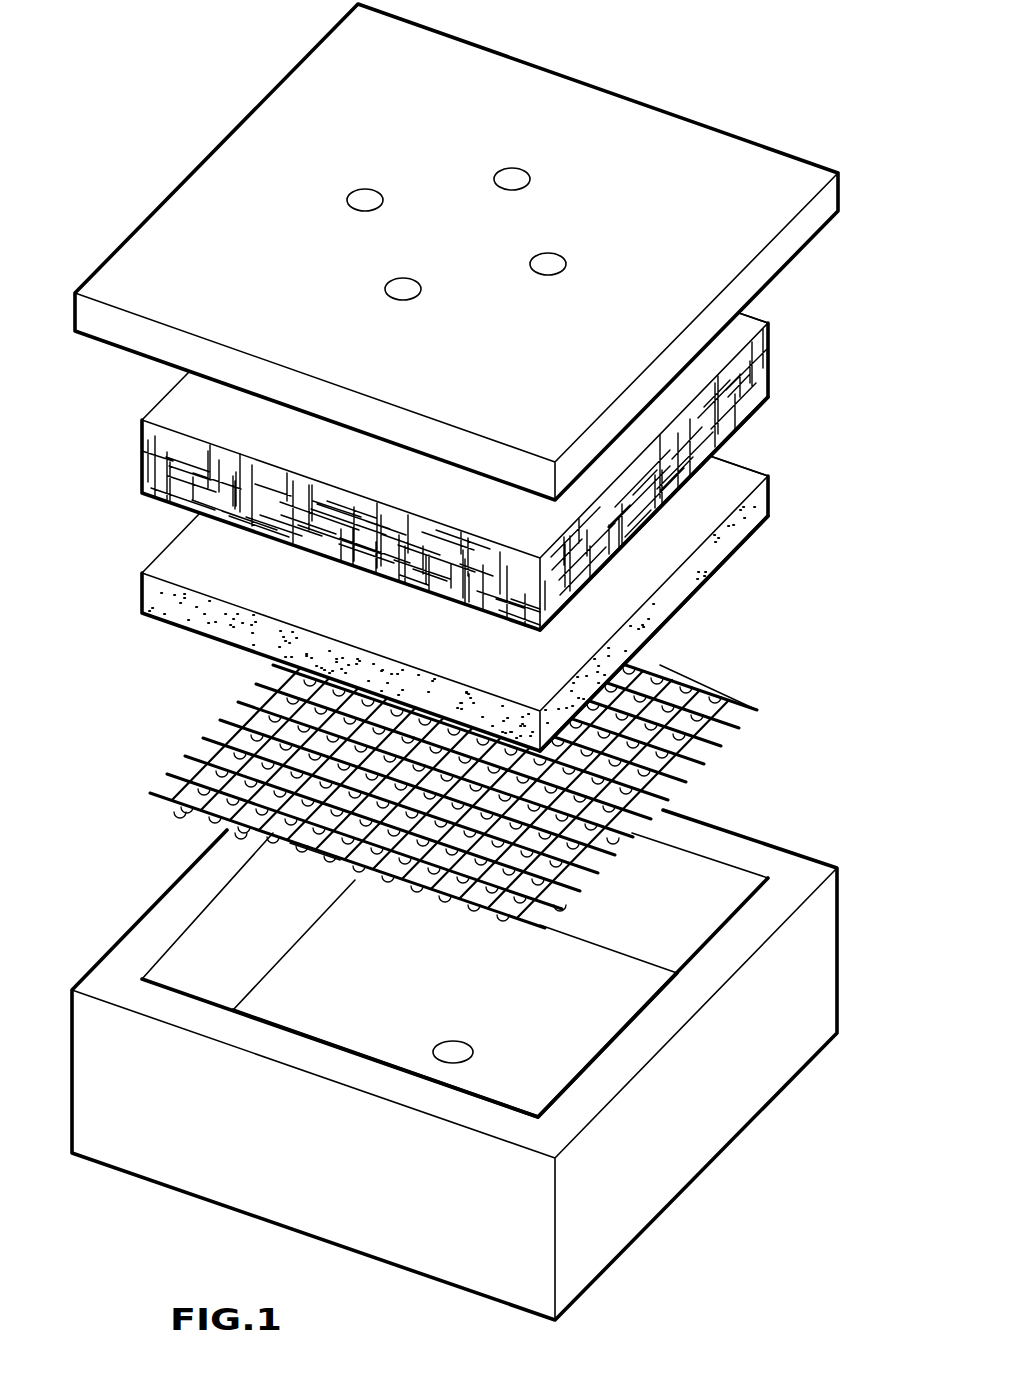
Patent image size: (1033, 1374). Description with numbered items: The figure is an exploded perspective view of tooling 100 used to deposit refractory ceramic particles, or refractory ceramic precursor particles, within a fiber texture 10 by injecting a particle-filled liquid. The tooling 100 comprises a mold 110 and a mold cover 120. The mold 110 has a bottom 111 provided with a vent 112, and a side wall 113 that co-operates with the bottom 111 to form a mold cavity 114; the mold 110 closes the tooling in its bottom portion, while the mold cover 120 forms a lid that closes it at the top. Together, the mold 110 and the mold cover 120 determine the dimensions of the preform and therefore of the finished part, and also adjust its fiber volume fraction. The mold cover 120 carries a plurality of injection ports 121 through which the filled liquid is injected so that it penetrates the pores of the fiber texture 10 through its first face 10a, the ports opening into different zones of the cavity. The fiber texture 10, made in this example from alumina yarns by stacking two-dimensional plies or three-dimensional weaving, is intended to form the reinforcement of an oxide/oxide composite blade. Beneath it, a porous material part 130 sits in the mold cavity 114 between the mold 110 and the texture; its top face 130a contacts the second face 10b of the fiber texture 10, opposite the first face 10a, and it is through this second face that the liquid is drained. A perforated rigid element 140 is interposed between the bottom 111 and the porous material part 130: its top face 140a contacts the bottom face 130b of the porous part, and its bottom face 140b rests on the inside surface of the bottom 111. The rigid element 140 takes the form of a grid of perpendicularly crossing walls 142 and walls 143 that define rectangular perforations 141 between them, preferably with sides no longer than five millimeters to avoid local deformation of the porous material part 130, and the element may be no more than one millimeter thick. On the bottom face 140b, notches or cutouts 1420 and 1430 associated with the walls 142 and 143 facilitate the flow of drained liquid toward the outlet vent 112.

The tooling 100 is at (462, 660).
The mold cover 120 is at (705, 148).
The injection ports 121 is at (543, 262).
The fiber texture 10 is at (757, 358).
The first face of the fiber texture 10a is at (750, 327).
The second face of the fiber texture 10b is at (765, 413).
The porous material part 130 is at (758, 500).
The top face of the porous material part 130a is at (742, 487).
The bottom face of the porous material part 130b is at (752, 532).
The perforated rigid element 140 is at (458, 771).
The top face of the perforated rigid element 140a is at (687, 680).
The bottom face of the perforated rigid element 140b is at (312, 864).
The perforations 141 is at (310, 717).
The walls 142 is at (405, 897).
The walls 143 is at (700, 779).
The notches or cutouts 1420 is at (614, 838).
The notches or cutouts 1430 is at (241, 833).
The mold 110 is at (788, 955).
The bottom 111 is at (552, 1037).
The vent 112 is at (450, 1047).
The side wall 113 is at (203, 940).
The mold cavity 114 is at (456, 986).